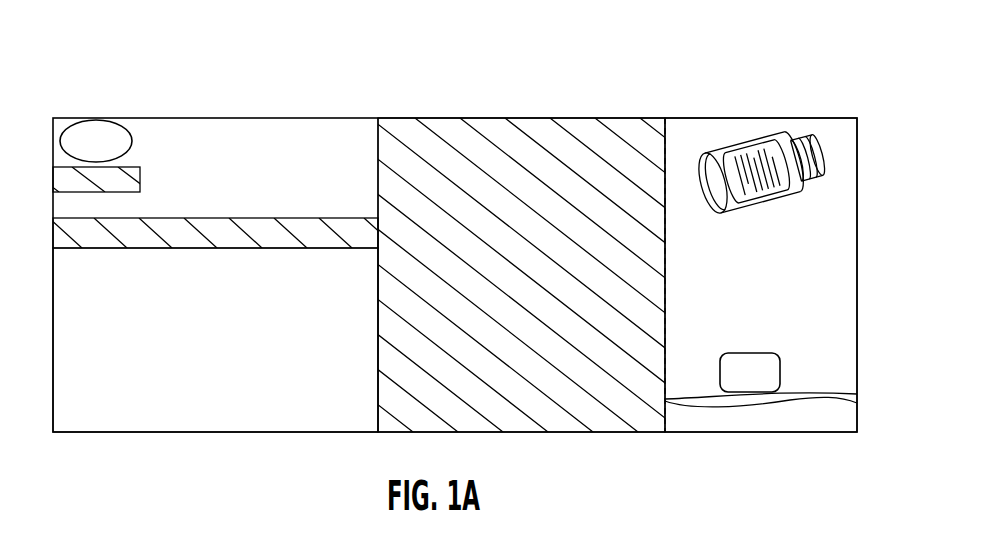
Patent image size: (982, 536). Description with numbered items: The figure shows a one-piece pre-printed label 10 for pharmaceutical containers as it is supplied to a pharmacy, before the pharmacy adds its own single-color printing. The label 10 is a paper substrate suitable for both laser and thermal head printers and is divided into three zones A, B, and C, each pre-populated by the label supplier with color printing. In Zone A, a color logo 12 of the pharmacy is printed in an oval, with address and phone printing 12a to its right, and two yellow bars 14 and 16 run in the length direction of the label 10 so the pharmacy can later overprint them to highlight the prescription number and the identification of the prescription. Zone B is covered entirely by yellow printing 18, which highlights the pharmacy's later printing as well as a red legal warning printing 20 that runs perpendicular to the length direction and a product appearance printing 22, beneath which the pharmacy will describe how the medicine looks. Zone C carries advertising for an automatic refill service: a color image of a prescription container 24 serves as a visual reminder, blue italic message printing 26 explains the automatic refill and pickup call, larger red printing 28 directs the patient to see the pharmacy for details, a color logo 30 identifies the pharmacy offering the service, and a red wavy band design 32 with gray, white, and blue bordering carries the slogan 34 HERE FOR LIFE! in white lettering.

The pre-printed label 10 is at (402, 78).
The color logo 12 is at (95, 121).
The address and phone printing 12a is at (323, 130).
The yellow bar 14 is at (65, 183).
The yellow bar 16 is at (77, 237).
The yellow printing 18 is at (560, 130).
The legal warning printing 20 is at (407, 428).
The product appearance printing 22 is at (513, 405).
The prescription container image 24 is at (730, 147).
The automatic refill message printing 26 is at (840, 219).
The see pharmacy printing 28 is at (718, 348).
The color logo of refill service pharmacy 30 is at (832, 378).
The color design band 32 is at (857, 393).
The slogan 34 is at (784, 425).
The Zone A is at (98, 330).
The Zone B is at (480, 150).
The Zone C is at (842, 183).